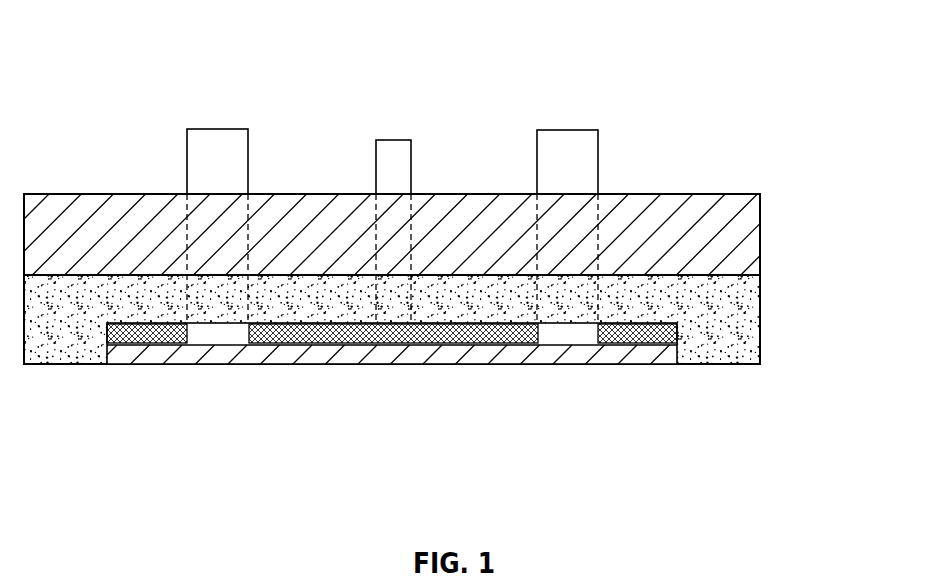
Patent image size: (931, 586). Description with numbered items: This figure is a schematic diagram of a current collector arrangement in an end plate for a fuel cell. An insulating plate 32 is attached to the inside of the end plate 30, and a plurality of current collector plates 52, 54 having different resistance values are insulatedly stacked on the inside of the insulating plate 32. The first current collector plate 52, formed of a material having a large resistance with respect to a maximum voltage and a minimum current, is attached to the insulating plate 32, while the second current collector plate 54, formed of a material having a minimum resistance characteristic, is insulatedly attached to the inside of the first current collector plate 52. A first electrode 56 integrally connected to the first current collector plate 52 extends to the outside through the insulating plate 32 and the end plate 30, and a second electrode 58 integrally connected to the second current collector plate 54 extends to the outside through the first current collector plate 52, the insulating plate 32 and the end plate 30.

The end plate 30 is at (688, 203).
The insulating plate 32 is at (750, 323).
The first current collector plate 52 is at (398, 333).
The second current collector plate 54 is at (293, 358).
The first electrode 56 is at (393, 148).
The second electrode 58 is at (215, 138).